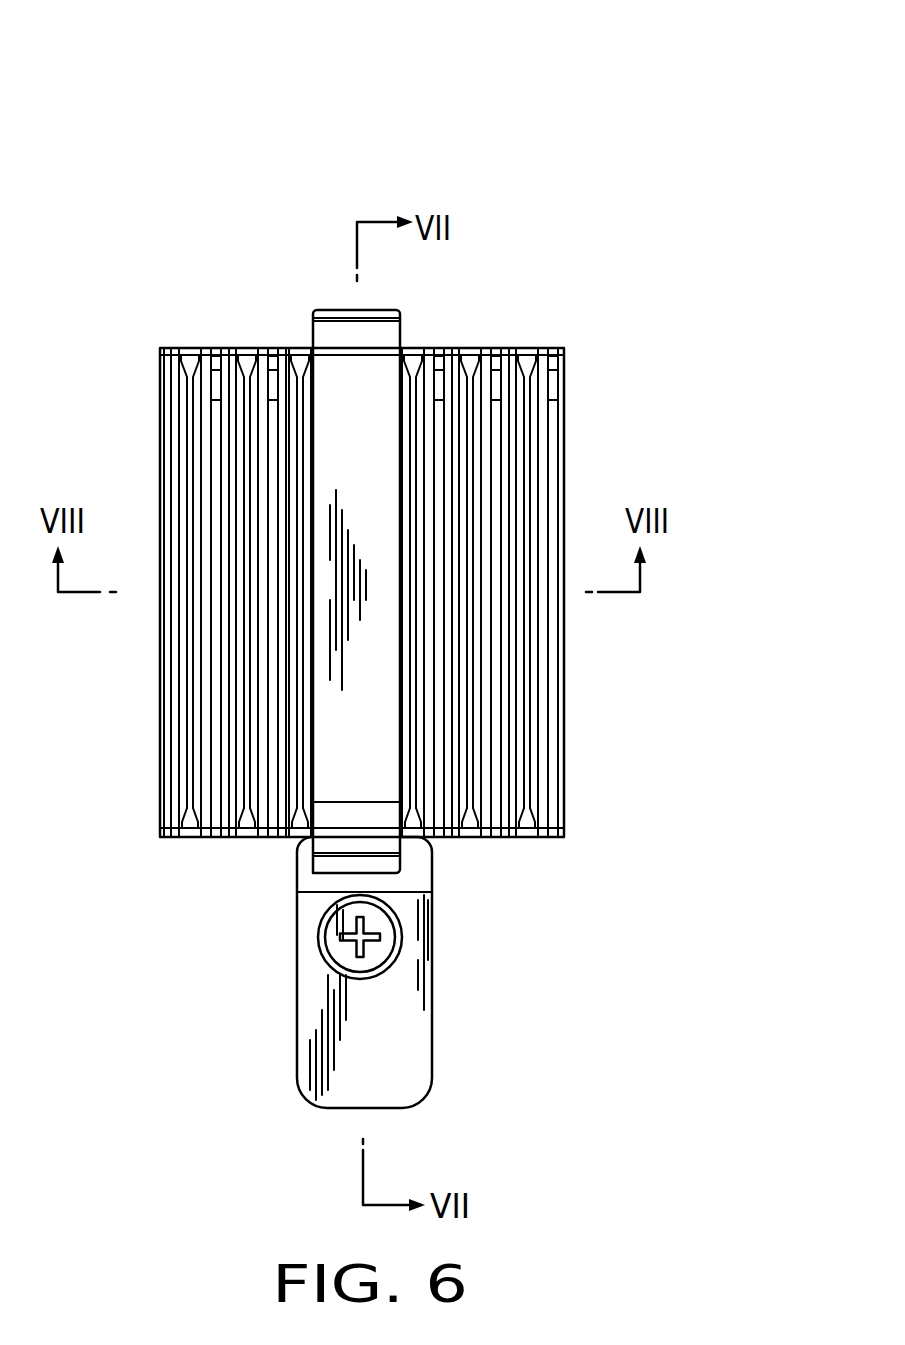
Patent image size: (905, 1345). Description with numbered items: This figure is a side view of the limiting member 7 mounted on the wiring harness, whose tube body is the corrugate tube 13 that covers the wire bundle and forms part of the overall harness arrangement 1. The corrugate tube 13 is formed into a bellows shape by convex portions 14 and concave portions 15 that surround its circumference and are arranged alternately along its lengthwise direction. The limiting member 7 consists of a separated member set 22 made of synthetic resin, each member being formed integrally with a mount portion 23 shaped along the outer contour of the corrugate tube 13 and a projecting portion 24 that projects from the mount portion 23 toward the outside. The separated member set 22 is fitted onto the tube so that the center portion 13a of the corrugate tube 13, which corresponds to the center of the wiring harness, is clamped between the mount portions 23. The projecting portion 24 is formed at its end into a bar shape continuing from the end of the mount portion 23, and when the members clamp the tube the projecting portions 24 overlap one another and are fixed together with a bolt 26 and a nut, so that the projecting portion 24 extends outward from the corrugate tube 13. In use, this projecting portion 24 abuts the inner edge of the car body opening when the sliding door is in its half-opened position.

The heat radiating unit 1 is at (395, 554).
The limiting member 7 is at (393, 972).
The corrugate tube 13 is at (248, 345).
The center portion 13a is at (262, 397).
The convex portions 14 is at (260, 395).
The concave portions 15 is at (297, 753).
The separated member set 22 is at (433, 983).
The mount portion 23 is at (380, 507).
The projecting portion 24 is at (327, 1050).
The bolt 26 is at (333, 968).